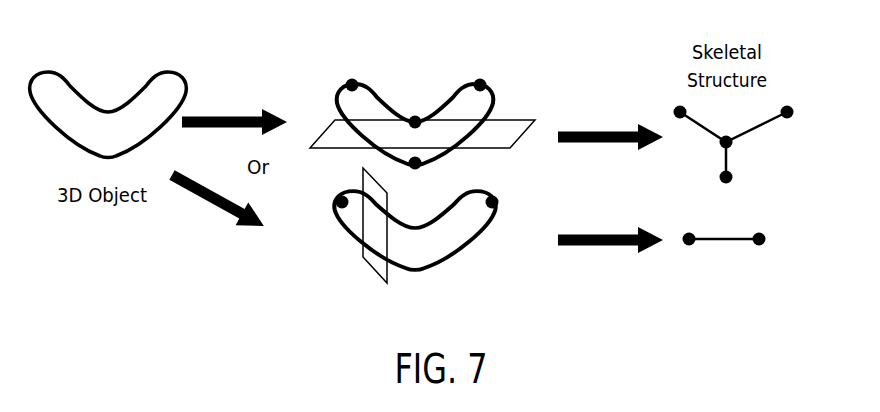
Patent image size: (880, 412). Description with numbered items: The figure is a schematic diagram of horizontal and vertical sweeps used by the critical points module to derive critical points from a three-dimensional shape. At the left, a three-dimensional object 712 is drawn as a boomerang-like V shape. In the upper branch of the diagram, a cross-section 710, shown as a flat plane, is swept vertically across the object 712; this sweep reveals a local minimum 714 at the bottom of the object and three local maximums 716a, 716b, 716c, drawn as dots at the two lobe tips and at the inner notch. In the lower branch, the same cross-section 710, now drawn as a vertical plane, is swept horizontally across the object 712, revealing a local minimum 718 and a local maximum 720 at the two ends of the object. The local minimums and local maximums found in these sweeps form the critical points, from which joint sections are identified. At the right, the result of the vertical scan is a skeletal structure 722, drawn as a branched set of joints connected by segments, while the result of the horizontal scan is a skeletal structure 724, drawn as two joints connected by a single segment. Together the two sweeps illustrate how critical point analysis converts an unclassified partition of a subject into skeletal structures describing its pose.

The cross-section 710 is at (323, 133).
The 3D object 712 is at (77, 85).
The local minimum 714 is at (421, 165).
The local maximum 716a is at (350, 83).
The local maximum 716b is at (415, 120).
The local maximum 716c is at (481, 82).
The local minimum 718 is at (338, 201).
The local maximum 720 is at (500, 202).
The skeletal structure 722 is at (767, 112).
The skeletal structure 724 is at (738, 240).